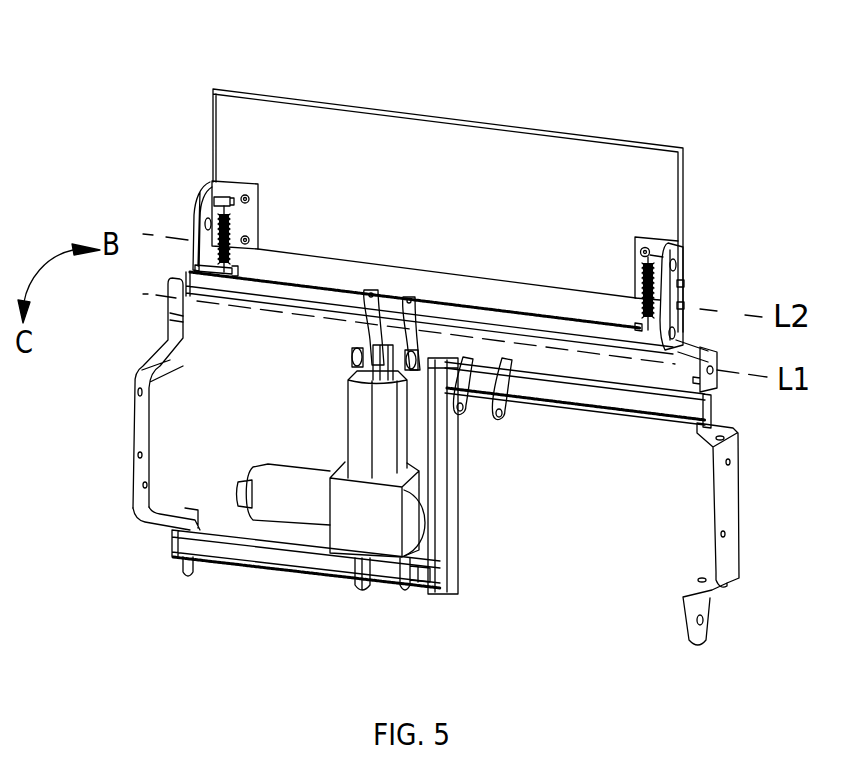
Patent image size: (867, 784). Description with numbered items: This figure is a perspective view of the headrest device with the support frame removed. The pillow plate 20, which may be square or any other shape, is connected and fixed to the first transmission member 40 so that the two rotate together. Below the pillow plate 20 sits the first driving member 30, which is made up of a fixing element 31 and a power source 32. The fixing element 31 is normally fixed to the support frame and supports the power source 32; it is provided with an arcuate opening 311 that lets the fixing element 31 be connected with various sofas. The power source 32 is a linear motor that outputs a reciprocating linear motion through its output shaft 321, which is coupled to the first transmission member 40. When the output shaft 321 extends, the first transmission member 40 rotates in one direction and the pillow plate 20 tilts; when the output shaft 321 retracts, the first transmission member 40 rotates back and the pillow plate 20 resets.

The pillow plate 20 is at (265, 118).
The first driving member 30 is at (258, 527).
The fixing element 31 is at (680, 410).
The arcuate opening 311 is at (137, 397).
The power source 32 is at (283, 517).
The output shaft 321 is at (402, 587).
The first transmission member 40 is at (193, 230).